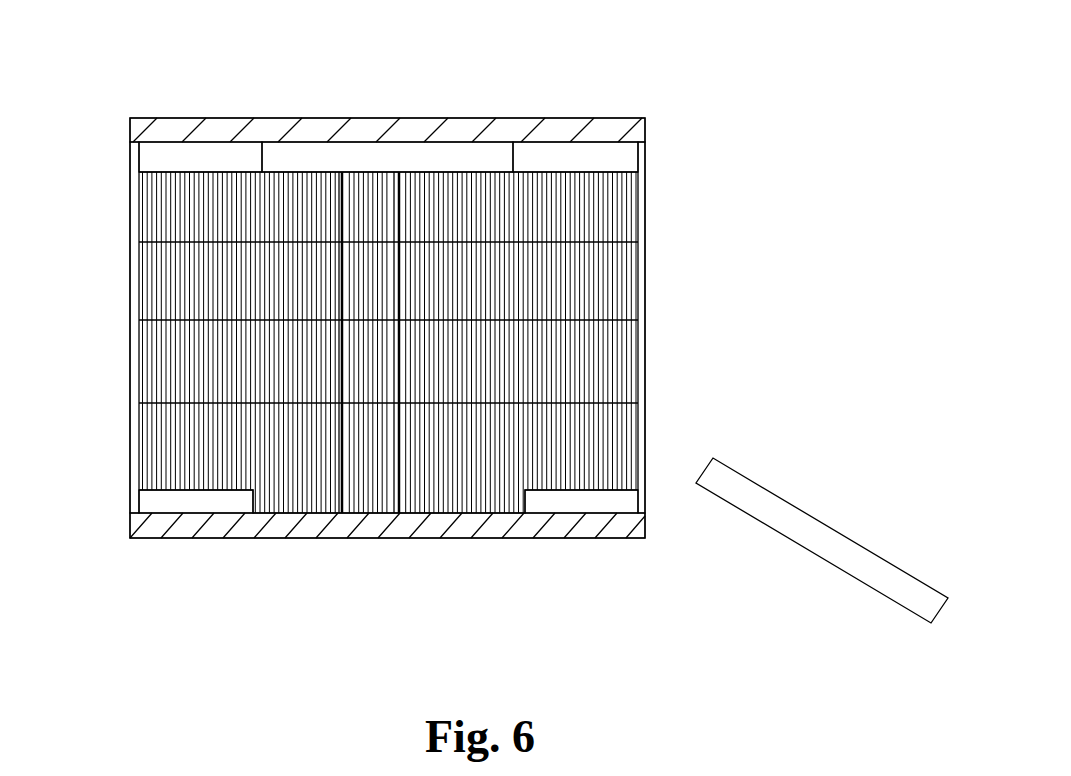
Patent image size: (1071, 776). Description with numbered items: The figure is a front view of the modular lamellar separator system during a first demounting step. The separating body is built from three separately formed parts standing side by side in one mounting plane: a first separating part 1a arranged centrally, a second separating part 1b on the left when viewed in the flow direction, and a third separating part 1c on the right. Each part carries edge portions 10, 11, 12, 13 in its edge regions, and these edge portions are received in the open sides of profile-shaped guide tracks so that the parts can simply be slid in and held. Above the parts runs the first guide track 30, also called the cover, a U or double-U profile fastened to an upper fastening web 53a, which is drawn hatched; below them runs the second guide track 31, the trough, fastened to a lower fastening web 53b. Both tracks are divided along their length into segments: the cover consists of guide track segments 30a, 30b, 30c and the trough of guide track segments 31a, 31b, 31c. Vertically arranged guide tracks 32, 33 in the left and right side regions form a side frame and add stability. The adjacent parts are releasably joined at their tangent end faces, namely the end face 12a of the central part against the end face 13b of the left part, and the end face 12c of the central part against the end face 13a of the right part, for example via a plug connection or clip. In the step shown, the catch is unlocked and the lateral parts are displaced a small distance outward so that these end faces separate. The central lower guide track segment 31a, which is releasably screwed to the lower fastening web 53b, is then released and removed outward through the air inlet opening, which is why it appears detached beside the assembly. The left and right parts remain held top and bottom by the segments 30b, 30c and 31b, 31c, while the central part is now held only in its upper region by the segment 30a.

The edge portion 10 is at (592, 173).
The edge portion 11 is at (412, 510).
The edge portion 12 is at (143, 333).
The end face 12a is at (358, 220).
The end face 12c is at (389, 436).
The edge portion 13 is at (633, 345).
The end face 13a is at (400, 451).
The end face 13b is at (337, 208).
The first separating part 1a is at (385, 181).
The second separating part 1b is at (167, 277).
The third separating part 1c is at (603, 279).
The first guide track 30 is at (479, 143).
The guide track segment 30a is at (352, 125).
The guide track segment 30b is at (182, 150).
The guide track segment 30c is at (618, 140).
The second guide track 31 is at (632, 512).
The guide track segment 31a is at (780, 522).
The guide track segment 31b is at (180, 502).
The guide track segment 31c is at (566, 508).
The vertically arranged guide track 32 is at (136, 225).
The vertically arranged guide track 33 is at (641, 237).
The upper fastening web 53a is at (258, 130).
The lower fastening web 53b is at (316, 536).